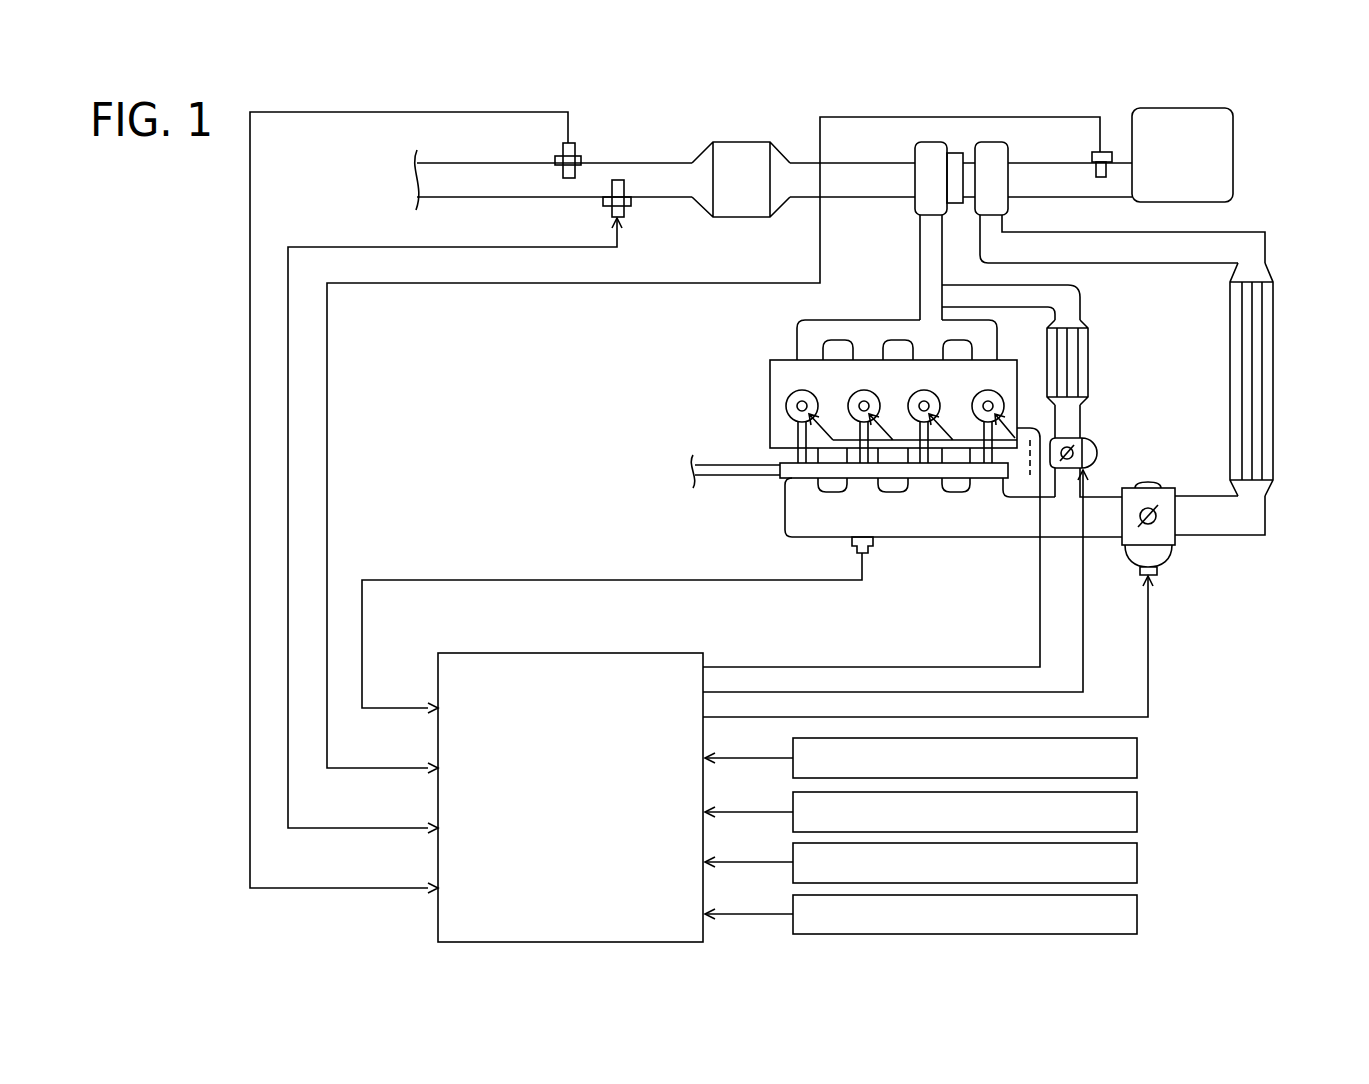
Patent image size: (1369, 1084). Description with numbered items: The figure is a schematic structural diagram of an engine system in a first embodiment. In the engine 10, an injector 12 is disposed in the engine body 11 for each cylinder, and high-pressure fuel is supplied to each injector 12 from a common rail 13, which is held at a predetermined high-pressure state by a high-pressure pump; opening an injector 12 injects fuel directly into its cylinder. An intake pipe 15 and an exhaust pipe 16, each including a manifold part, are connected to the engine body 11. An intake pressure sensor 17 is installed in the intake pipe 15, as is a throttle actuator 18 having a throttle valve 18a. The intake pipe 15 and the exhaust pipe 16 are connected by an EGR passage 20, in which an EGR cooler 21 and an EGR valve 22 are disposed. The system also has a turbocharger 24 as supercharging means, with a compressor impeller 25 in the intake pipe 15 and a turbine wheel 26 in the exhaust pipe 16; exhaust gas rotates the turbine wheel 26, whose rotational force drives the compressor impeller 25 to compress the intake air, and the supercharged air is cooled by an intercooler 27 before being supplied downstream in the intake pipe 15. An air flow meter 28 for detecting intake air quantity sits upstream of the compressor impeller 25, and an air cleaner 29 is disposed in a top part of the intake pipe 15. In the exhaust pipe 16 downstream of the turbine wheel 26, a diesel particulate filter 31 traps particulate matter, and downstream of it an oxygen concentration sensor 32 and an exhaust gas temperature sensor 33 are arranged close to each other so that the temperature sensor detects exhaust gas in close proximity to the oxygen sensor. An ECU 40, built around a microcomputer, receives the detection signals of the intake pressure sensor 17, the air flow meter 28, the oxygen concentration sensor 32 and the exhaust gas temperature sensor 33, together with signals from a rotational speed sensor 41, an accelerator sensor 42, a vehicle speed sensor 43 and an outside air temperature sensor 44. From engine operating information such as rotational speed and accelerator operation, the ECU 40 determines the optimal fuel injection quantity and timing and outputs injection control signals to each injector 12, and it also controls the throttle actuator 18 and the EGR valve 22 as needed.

The engine 10 is at (906, 452).
The engine body 11 is at (770, 404).
The injector 12 is at (846, 392).
The common rail 13 is at (785, 490).
The intake pipe 15 is at (965, 538).
The exhaust pipe 16 is at (918, 268).
The intake pressure sensor 17 is at (873, 550).
The throttle actuator 18 is at (1175, 503).
The throttle valve 18a is at (1152, 506).
The EGR passage 20 is at (1082, 296).
The EGR cooler 21 is at (1090, 364).
The EGR valve 22 is at (1098, 447).
The turbocharger 24 is at (994, 148).
The compressor impeller 25 is at (992, 142).
The turbine wheel 26 is at (931, 142).
The intercooler 27 is at (1275, 335).
The air flow meter 28 is at (1102, 152).
The air cleaner 29 is at (1225, 150).
The diesel particulate filter 31 is at (738, 140).
The oxygen concentration sensor 32 is at (631, 203).
The exhaust gas temperature sensor 33 is at (581, 160).
The ECU 40 is at (705, 656).
The rotational speed sensor 41 is at (1140, 760).
The accelerator sensor 42 is at (1140, 812).
The vehicle speed sensor 43 is at (1140, 864).
The outside air temperature sensor 44 is at (1140, 916).